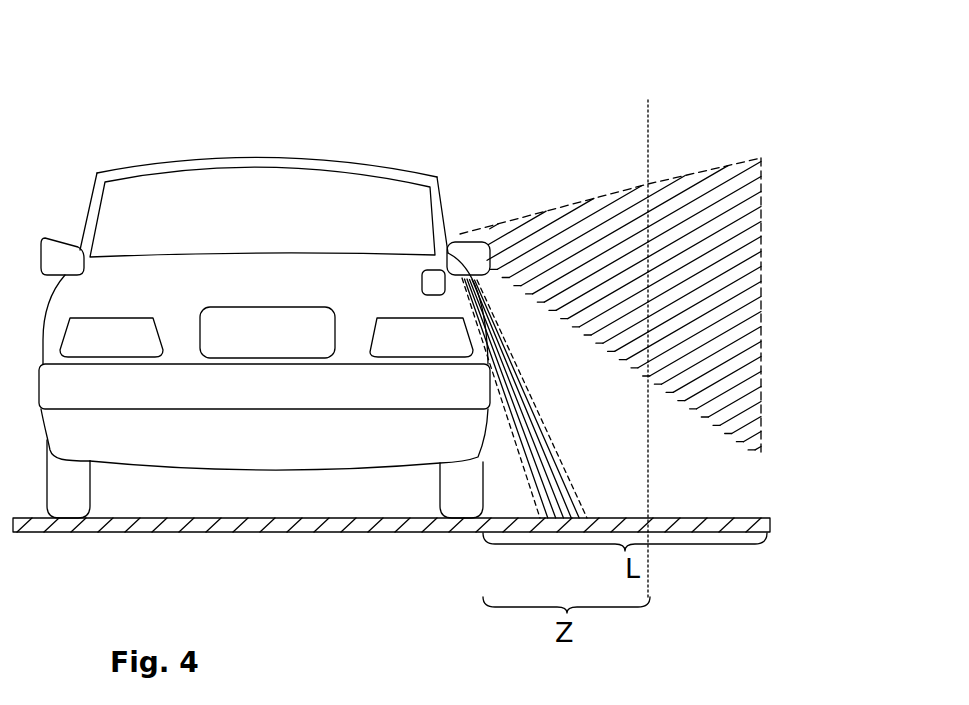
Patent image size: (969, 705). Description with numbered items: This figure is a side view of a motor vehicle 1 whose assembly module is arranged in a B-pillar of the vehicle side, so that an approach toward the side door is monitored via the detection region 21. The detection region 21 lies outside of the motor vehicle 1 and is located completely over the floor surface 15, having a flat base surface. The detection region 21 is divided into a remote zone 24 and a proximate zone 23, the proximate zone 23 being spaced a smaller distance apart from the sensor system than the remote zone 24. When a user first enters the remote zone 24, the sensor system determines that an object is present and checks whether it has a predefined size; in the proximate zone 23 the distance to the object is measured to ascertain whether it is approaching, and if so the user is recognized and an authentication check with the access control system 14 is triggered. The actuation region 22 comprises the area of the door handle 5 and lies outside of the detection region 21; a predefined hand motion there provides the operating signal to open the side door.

The motor vehicle 1 is at (215, 125).
The access control system 14 is at (433, 280).
The door handle 5 is at (474, 288).
The detection region 21 is at (727, 278).
The actuation region 22 is at (556, 495).
The proximate zone 23 is at (572, 238).
The remote zone 24 is at (705, 187).
The floor surface 15 is at (768, 532).